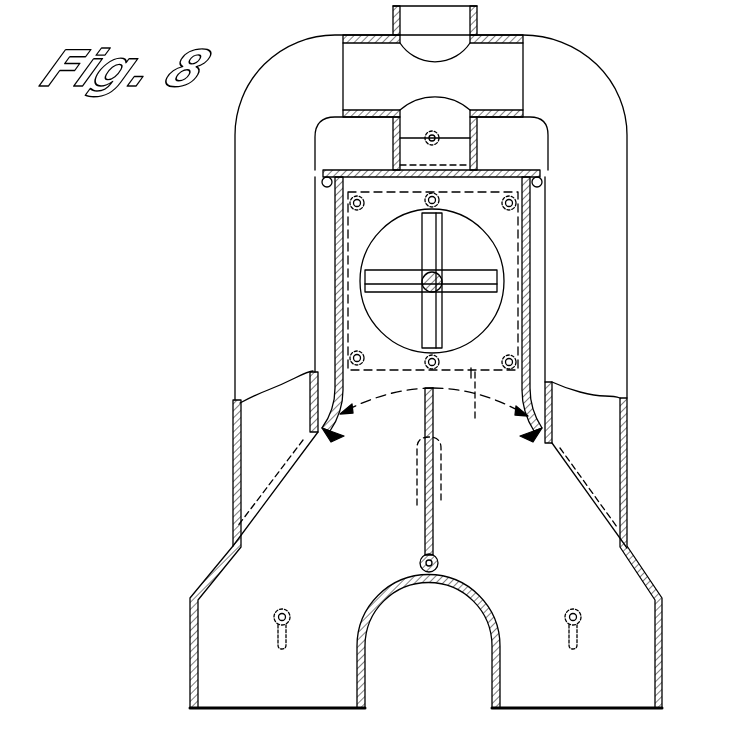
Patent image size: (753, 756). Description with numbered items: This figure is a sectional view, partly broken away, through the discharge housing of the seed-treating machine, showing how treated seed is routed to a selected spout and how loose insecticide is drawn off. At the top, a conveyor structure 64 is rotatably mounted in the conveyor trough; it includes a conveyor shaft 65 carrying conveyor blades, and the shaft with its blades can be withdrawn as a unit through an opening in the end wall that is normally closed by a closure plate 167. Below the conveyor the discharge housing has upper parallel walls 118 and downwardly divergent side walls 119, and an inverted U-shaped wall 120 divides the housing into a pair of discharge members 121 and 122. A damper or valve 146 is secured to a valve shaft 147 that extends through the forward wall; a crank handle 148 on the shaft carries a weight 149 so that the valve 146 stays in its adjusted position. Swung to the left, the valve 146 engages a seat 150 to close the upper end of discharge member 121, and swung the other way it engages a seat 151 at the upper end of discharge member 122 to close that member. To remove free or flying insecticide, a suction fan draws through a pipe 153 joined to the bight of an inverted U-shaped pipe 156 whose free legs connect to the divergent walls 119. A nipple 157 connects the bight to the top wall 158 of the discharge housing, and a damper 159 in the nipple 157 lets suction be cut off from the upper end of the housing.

The pipe 153 is at (477, 23).
The inverted U-shaped pipe 156 is at (626, 105).
The nipple 157 is at (477, 160).
The top wall 158 is at (377, 169).
The damper 159 is at (470, 137).
The upper parallel walls 118 is at (530, 277).
The conveyor structure 64 is at (486, 294).
The conveyor shaft 65 is at (438, 291).
The damper or valve 146 is at (424, 426).
The closure plate 167 is at (483, 411).
The seat 150 is at (333, 440).
The seat 151 is at (532, 440).
The weight 149 is at (410, 489).
The crank handle 148 is at (437, 533).
The valve shaft 147 is at (420, 565).
The downwardly divergent side walls 119 is at (584, 493).
The inverted U-shaped wall 120 is at (462, 590).
The discharge member 121 is at (278, 700).
The discharge member 122 is at (538, 693).